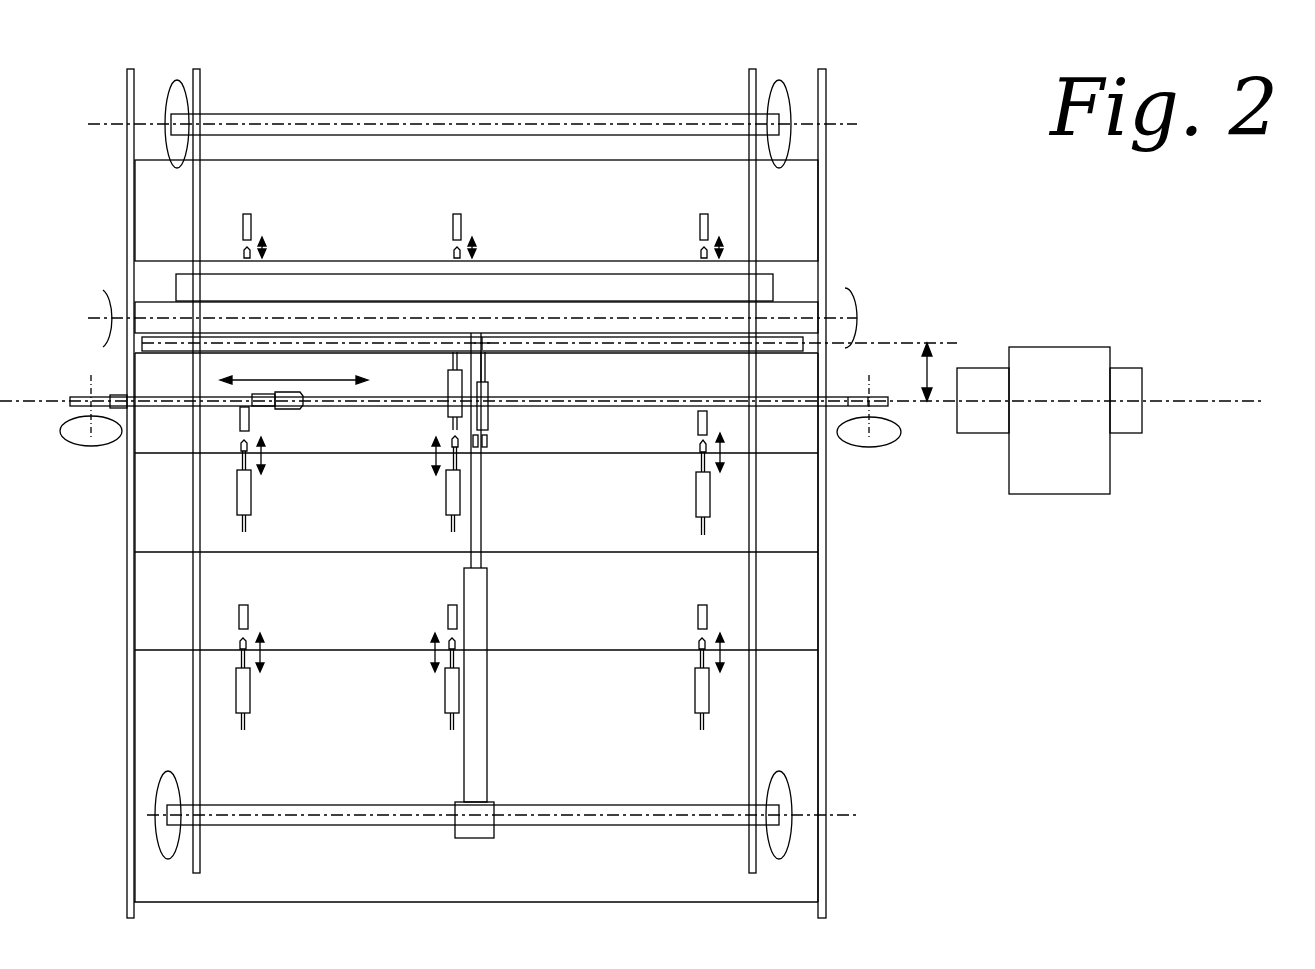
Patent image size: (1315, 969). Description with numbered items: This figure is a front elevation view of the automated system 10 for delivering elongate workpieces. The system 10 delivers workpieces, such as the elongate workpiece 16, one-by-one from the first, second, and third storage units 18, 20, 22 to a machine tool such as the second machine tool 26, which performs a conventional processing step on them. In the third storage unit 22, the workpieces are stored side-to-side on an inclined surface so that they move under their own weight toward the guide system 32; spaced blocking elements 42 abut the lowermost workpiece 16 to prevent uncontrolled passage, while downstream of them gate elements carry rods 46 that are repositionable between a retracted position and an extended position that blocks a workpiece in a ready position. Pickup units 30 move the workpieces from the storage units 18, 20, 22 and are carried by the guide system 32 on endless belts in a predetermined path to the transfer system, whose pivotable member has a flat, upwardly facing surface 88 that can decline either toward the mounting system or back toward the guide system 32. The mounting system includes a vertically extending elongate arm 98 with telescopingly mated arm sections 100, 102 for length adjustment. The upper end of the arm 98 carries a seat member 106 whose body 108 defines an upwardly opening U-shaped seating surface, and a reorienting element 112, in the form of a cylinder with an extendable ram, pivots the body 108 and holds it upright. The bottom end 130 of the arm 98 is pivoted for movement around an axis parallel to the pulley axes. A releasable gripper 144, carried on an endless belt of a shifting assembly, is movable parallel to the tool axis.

The automated system for delivering elongate workpieces 10 is at (1214, 310).
The elongate workpiece 16 is at (603, 393).
The first storage unit 18 is at (804, 615).
The second storage unit 20 is at (801, 380).
The third storage unit 22 is at (803, 218).
The second machine tool 26 is at (1114, 346).
The pickup unit 30 is at (764, 291).
The guide system 32 is at (774, 68).
The blocking element 42 is at (248, 212).
The rod 46 is at (244, 246).
The upwardly facing surface 88 is at (808, 315).
The elongate arm 98 is at (490, 723).
The arm section 100 is at (478, 535).
The arm section 102 is at (478, 636).
The seat member 106 is at (695, 342).
The body 108 is at (615, 355).
The reorienting element 112 is at (492, 387).
The bottom end 130 is at (490, 781).
The releasable gripper 144 is at (272, 409).